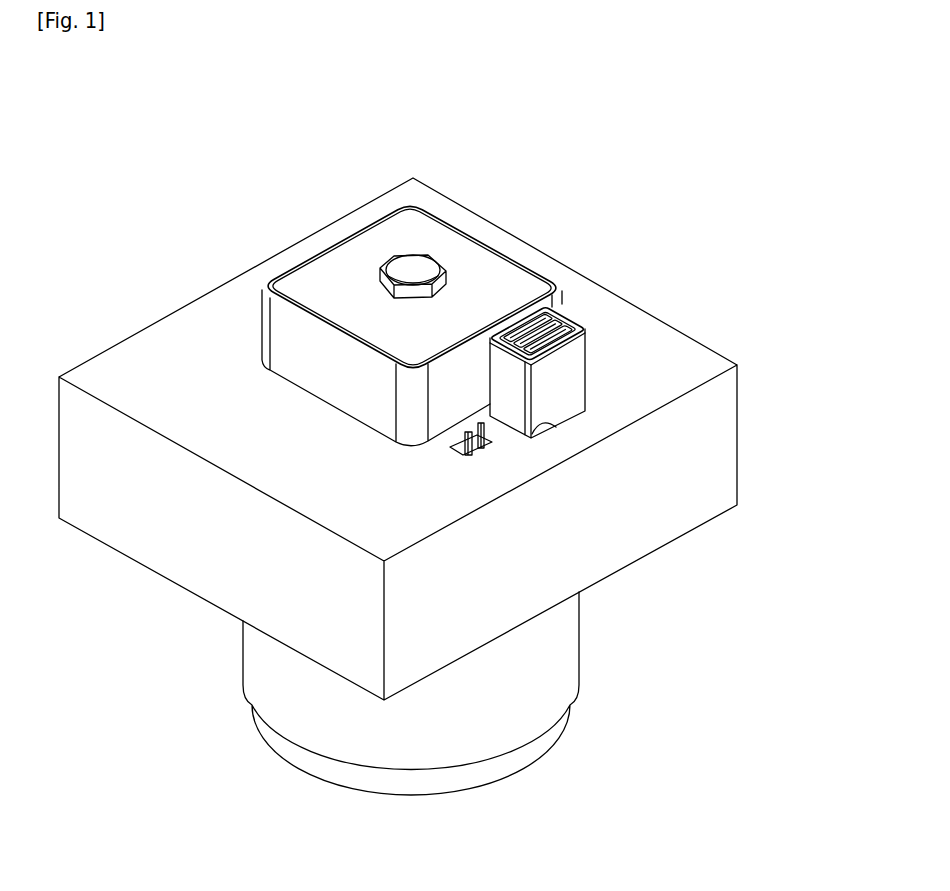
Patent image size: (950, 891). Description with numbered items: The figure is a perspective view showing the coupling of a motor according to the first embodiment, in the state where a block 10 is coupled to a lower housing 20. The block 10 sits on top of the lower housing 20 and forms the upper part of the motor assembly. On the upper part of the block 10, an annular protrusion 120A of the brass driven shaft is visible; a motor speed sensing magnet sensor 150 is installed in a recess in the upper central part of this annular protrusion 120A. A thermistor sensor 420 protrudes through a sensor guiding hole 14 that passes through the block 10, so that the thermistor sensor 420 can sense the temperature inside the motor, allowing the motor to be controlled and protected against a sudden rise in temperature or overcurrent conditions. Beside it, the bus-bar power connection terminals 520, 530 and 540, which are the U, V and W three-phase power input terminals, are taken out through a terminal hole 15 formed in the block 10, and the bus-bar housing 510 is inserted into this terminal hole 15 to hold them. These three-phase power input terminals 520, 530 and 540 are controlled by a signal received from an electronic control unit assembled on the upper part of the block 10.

The block 10 is at (755, 428).
The lower housing 20 is at (326, 804).
The annular protrusion 120A is at (443, 297).
The motor speed sensing magnet sensor 150 is at (413, 256).
The bus-bar housing 510 is at (583, 367).
The bus-bar power connection terminal 520 is at (563, 317).
The bus-bar power connection terminal 540 is at (528, 312).
The bus-bar power connection terminal 530 is at (538, 340).
The sensor guiding hole 14 is at (458, 436).
The thermistor sensor 420 is at (483, 448).
The terminal hole 15 is at (540, 424).